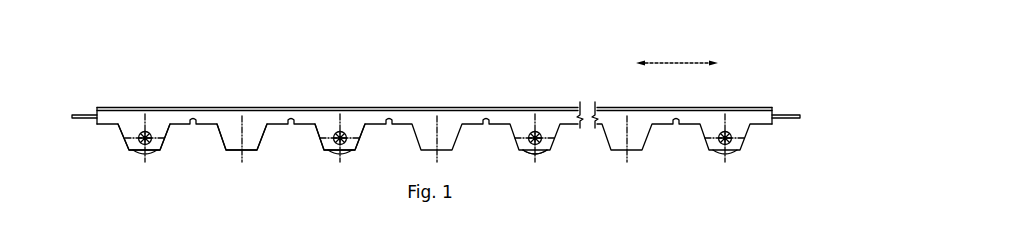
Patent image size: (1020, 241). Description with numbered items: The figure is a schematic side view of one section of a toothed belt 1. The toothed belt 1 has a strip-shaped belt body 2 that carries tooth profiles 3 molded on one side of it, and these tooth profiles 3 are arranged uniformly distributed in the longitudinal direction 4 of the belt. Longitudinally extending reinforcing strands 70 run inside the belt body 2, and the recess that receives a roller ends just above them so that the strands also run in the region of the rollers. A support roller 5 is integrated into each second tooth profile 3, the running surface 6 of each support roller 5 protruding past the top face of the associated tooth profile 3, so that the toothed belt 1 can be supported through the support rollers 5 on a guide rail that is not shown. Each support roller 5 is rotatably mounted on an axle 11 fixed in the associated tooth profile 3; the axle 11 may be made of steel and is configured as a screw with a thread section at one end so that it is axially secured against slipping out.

The toothed belt 1 is at (427, 115).
The belt body 2 is at (427, 110).
The tooth profiles 3 is at (123, 142).
The longitudinal direction 4 is at (676, 62).
The support roller 5 is at (147, 153).
The running surface 6 is at (538, 156).
The axle 11 is at (548, 147).
The reinforcing strands 70 is at (75, 118).